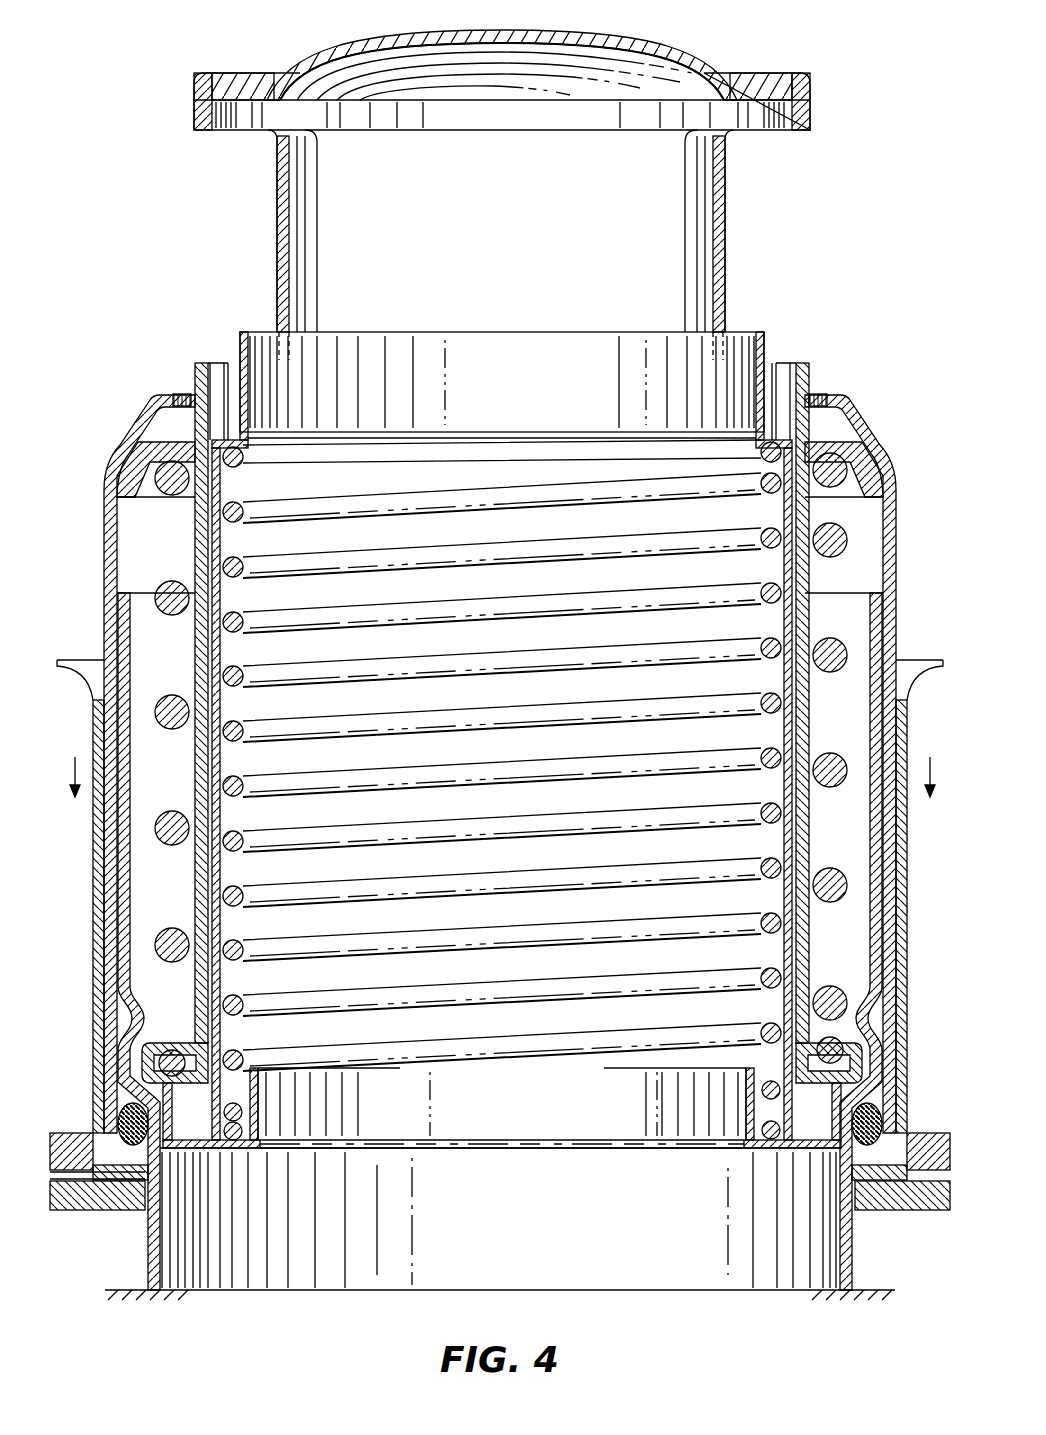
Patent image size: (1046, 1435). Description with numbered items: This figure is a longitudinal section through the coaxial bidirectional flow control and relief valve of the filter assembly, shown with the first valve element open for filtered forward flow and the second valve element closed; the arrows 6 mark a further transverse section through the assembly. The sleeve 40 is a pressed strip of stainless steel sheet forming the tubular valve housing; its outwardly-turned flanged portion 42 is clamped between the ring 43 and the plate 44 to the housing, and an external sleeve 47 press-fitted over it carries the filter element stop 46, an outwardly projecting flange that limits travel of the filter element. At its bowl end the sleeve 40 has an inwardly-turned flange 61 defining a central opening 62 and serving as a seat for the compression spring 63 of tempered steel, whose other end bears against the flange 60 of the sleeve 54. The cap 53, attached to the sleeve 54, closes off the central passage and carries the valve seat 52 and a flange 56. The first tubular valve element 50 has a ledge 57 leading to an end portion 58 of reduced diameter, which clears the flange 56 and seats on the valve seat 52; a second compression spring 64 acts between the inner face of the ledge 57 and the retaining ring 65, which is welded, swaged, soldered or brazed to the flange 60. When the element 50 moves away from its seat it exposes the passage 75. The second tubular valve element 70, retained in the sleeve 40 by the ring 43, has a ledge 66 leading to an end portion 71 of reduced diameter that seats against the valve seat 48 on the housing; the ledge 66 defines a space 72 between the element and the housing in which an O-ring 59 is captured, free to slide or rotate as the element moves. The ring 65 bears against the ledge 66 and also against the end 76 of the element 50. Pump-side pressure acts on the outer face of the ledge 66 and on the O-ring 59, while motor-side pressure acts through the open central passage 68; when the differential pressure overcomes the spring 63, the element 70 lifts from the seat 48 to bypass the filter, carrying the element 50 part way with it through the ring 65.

The sleeve 40 is at (895, 550).
The outwardly-turned flanged portion 42 is at (70, 1176).
The ring 43 is at (106, 1198).
The plate 44 is at (68, 1142).
The filter element stop 46 is at (930, 678).
The external sleeve 47 is at (905, 898).
The valve seat 48 is at (124, 1290).
The first tubular valve element 50 is at (214, 542).
The valve seat 52 is at (262, 102).
The cap 53 is at (347, 70).
The sleeve 54 is at (205, 652).
The flange 56 is at (194, 106).
The ledge 57 is at (230, 385).
The end portion of reduced diameter 58 is at (770, 343).
The O-ring 59 is at (884, 1124).
The flange 60 is at (824, 1078).
The inwardly-turned flange 61 is at (171, 395).
The central opening 62 is at (815, 396).
The compression spring 63 is at (172, 726).
The second compression spring 64 is at (135, 458).
The retaining ring 65 is at (777, 1149).
The ledge 66 is at (878, 1098).
The open central passage 68 is at (518, 399).
The second tubular valve element 70 is at (130, 903).
The end portion of reduced diameter 71 is at (852, 1243).
The space 72 is at (120, 1105).
The passage 75 is at (513, 224).
The end 76 is at (212, 1134).
The section line 6 is at (70, 799).